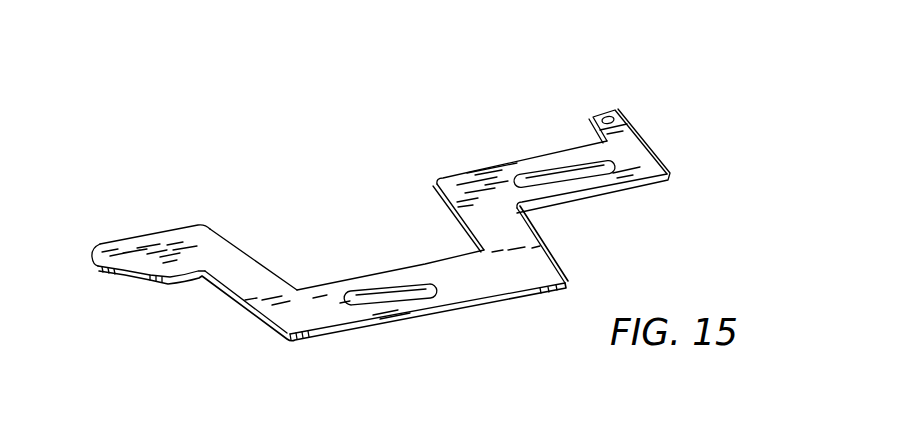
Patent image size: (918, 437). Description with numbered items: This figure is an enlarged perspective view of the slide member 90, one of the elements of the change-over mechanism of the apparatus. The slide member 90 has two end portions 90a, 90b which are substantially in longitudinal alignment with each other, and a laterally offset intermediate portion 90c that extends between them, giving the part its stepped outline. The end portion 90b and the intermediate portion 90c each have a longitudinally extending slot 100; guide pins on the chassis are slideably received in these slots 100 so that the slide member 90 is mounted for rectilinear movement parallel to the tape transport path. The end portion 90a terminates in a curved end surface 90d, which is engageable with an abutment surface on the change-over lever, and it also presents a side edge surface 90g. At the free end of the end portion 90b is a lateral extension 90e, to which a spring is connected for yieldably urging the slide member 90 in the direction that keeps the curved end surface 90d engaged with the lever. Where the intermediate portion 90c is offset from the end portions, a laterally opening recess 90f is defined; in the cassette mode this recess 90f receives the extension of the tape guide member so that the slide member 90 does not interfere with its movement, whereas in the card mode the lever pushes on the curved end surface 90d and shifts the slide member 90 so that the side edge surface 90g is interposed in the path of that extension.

The slide member 90 is at (372, 226).
The end portion 90a is at (160, 242).
The end portion 90b is at (517, 167).
The intermediate portion 90c is at (342, 318).
The curved end surface 90d is at (95, 267).
The lateral extension 90e is at (613, 110).
The laterally opening recess 90f is at (420, 232).
The side edge surface 90g is at (204, 224).
The slots 100 is at (420, 278).